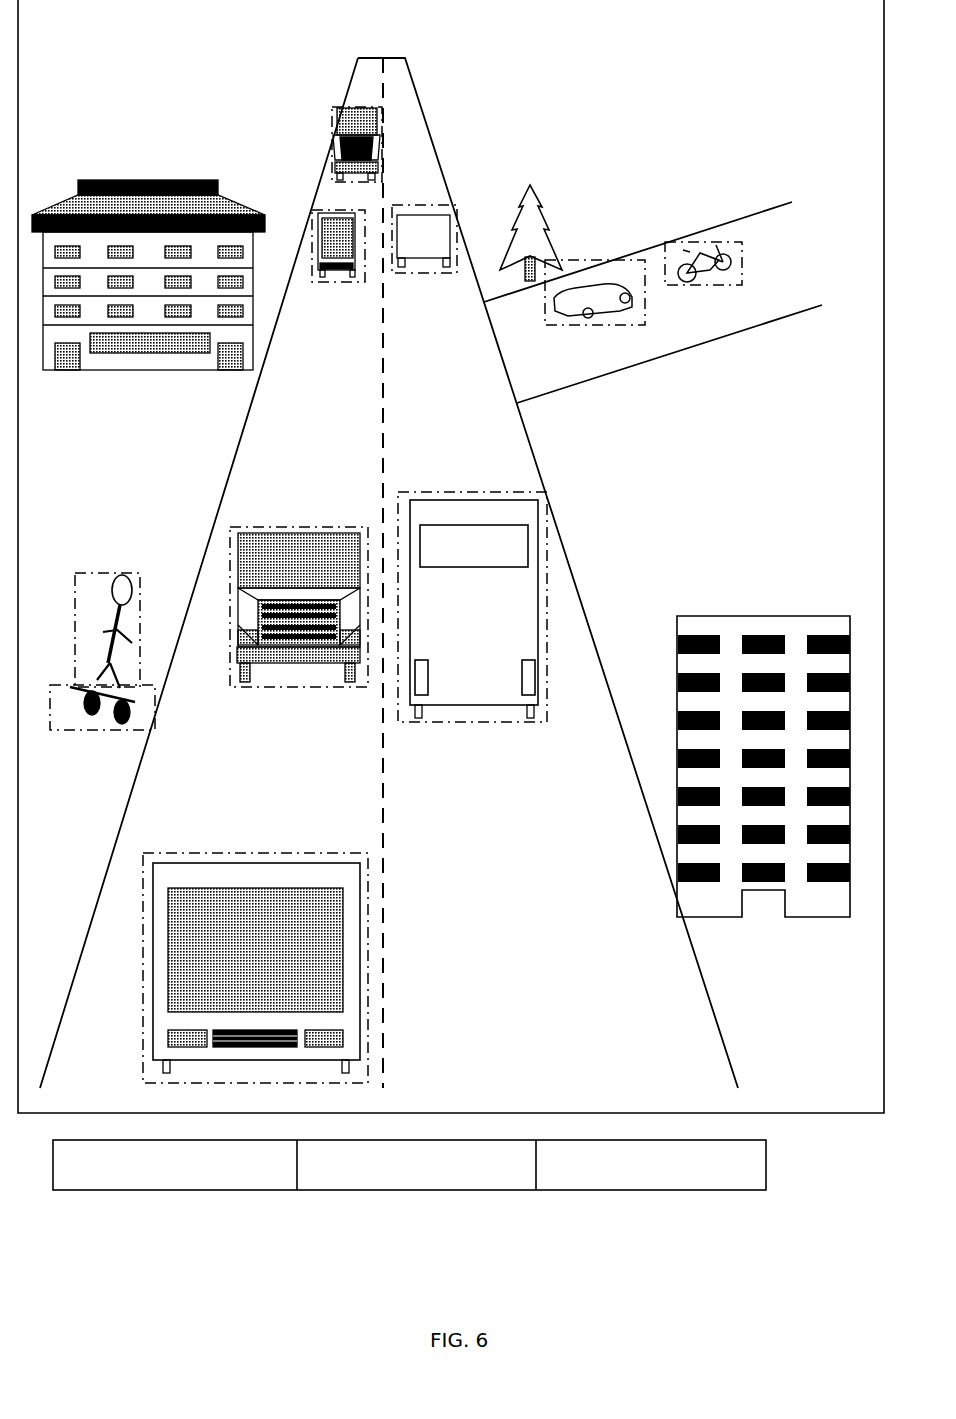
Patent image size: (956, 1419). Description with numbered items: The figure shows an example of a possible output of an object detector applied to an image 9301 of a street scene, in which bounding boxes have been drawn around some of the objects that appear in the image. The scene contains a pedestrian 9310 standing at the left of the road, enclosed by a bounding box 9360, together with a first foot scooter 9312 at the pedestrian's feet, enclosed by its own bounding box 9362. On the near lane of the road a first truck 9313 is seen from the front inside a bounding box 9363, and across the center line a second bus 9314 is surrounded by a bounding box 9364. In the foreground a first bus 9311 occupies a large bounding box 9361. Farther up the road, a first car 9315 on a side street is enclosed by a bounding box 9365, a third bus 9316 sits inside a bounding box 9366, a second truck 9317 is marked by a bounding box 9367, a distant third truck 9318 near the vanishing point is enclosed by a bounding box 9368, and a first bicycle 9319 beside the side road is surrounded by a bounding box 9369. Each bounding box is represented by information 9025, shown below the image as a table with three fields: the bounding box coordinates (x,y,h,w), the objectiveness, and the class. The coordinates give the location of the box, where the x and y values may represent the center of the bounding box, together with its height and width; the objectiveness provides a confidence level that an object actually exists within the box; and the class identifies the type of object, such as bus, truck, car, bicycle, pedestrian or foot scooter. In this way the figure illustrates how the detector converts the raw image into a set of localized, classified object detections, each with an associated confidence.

The image 9301 is at (755, 110).
The pedestrian 9310 is at (138, 572).
The bounding box of pedestrian 9360 is at (75, 597).
The first foot scooter 9312 is at (85, 713).
The bounding box of dog 9362 is at (120, 730).
The first truck 9313 is at (308, 532).
The bounding box of truck 9363 is at (307, 688).
The second bus 9314 is at (525, 500).
The bounding box of van 9364 is at (487, 492).
The first bus 9311 is at (238, 863).
The bounding box of television 9361 is at (145, 1007).
The first car 9315 is at (633, 272).
The bounding box of car 9365 is at (545, 324).
The third bus 9316 is at (345, 280).
The bounding box of car 9366 is at (327, 204).
The second truck 9317 is at (427, 214).
The bounding box of box object 9367 is at (408, 272).
The third truck 9318 is at (334, 142).
The bounding box of truck 9368 is at (338, 106).
The first bicycle 9319 is at (742, 272).
The bounding box of bicycle 9369 is at (690, 285).
The information 9025 is at (397, 1240).